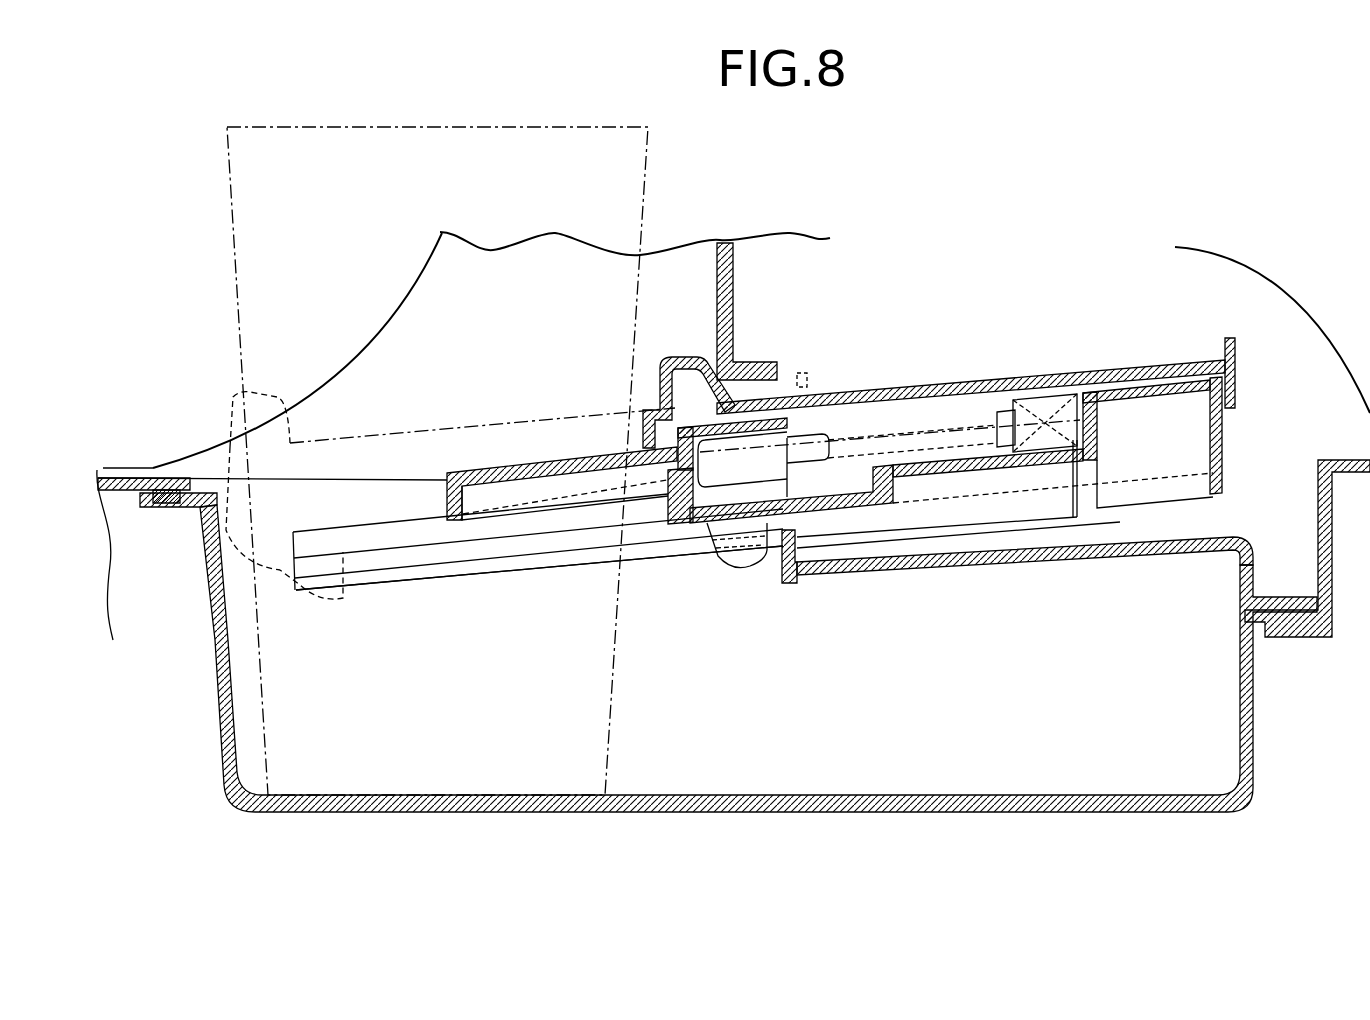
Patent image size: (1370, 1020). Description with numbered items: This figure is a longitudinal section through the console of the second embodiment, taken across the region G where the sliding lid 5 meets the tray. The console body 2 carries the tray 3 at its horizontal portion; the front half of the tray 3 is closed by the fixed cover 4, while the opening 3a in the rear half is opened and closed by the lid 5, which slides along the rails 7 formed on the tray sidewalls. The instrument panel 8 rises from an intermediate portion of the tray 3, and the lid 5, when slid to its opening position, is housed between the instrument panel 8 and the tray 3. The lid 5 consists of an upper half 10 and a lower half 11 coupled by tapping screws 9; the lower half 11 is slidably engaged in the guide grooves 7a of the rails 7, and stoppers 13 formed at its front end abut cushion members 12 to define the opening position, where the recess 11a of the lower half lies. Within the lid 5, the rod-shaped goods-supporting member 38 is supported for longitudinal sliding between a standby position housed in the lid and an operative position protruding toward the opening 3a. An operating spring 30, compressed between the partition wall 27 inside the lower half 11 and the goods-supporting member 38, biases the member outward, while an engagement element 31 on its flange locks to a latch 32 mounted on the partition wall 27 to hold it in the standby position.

The opening region G is at (650, 150).
The console body 2 is at (1353, 460).
The tray 3 is at (1256, 735).
The opening 3a is at (233, 490).
The fixed cover 4 is at (1000, 560).
The lid 5 is at (412, 406).
The rail 7 is at (383, 528).
The guide groove 7a is at (398, 560).
The instrument panel 8 is at (713, 262).
The tapping screw 9 is at (178, 516).
The upper half 10 is at (1022, 378).
The lower half 11 is at (1112, 383).
The recess of lid inner member 11a is at (1137, 480).
The cushion member 12 is at (778, 547).
The stopper 13 is at (740, 558).
The partition wall 27 is at (1097, 423).
The operating spring 30 is at (1083, 457).
The engagement element 31 is at (807, 447).
The latch 32 is at (1010, 403).
The goods-supporting member 38 is at (530, 463).